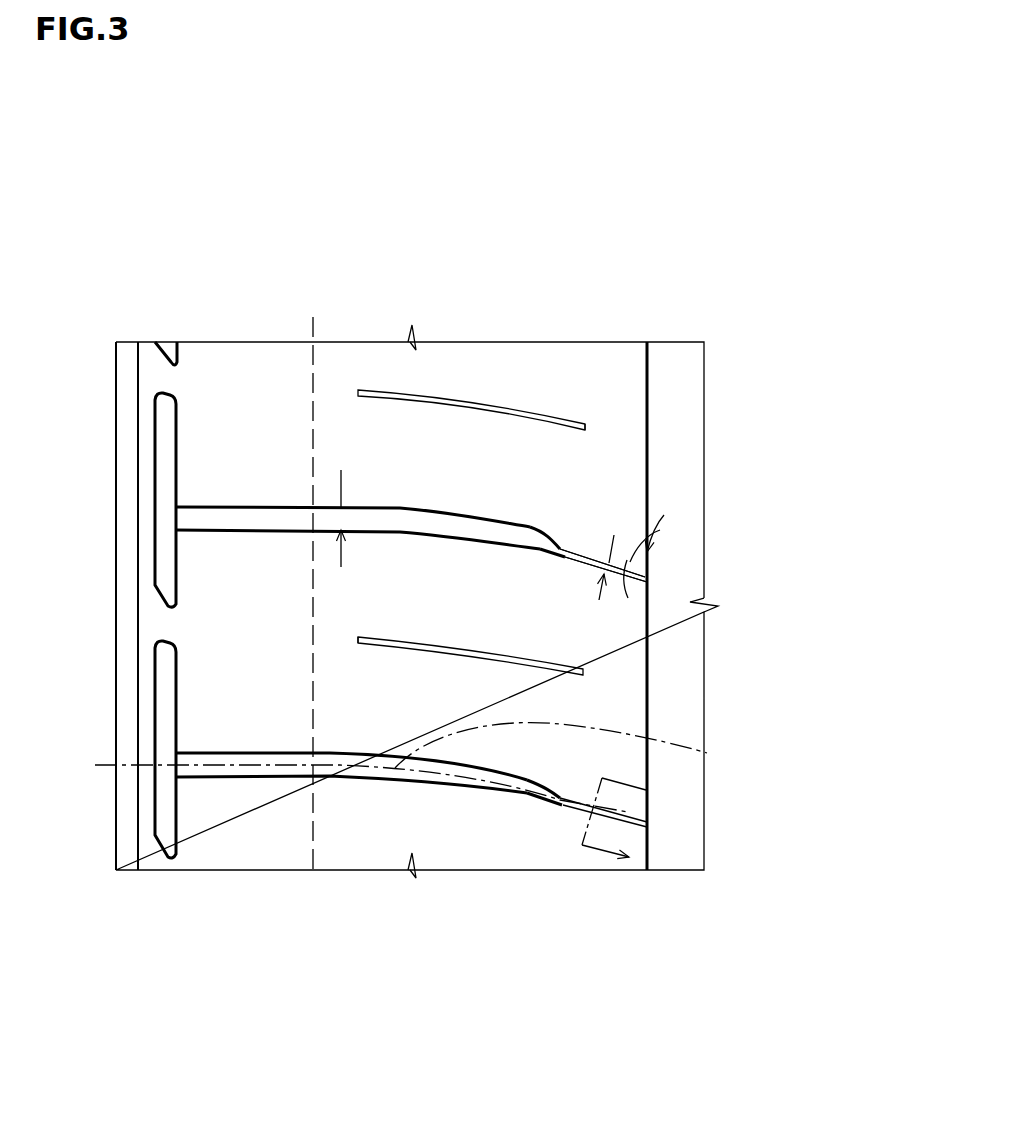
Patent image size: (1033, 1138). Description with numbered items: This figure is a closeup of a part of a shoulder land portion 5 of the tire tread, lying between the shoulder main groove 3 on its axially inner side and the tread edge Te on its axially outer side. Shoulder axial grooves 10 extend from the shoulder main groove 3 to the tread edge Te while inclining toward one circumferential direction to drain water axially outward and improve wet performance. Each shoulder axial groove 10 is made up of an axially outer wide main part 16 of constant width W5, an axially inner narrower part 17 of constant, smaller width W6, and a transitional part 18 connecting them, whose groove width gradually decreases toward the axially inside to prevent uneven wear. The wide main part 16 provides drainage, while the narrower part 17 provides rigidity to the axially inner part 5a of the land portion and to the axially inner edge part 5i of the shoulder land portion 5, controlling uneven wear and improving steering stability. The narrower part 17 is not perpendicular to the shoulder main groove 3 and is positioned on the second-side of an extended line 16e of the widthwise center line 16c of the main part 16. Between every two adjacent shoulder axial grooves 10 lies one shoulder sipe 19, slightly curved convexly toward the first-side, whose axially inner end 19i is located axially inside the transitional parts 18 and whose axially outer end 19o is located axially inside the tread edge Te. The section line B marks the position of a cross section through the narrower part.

The shoulder main groove 3 is at (672, 368).
The shoulder land portion 5 is at (610, 330).
The axially inner part of the land portion 5a is at (584, 548).
The axially inner edge part of the shoulder land portion 5i is at (647, 627).
The shoulder axial groove 10 is at (347, 625).
The wide main part 16 is at (410, 523).
The narrower part 17 is at (572, 558).
The transitional part 18 is at (530, 538).
The shoulder sipe 19 is at (434, 466).
The axially inner end of the shoulder sipe 19i is at (586, 427).
The axially outer end of the shoulder sipe 19o is at (358, 640).
The widthwise center line of the main part 16c is at (457, 767).
The extended line of the widthwise center line 16e is at (401, 767).
The tread edge Te is at (313, 332).
The width of the wide main part W5 is at (338, 517).
The width of the narrower part W6 is at (611, 548).
The section line B- B is at (627, 825).